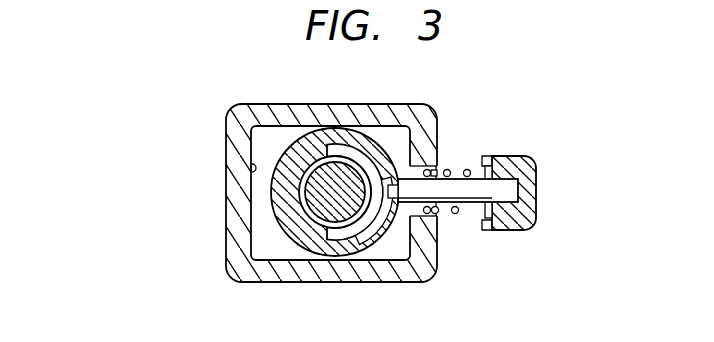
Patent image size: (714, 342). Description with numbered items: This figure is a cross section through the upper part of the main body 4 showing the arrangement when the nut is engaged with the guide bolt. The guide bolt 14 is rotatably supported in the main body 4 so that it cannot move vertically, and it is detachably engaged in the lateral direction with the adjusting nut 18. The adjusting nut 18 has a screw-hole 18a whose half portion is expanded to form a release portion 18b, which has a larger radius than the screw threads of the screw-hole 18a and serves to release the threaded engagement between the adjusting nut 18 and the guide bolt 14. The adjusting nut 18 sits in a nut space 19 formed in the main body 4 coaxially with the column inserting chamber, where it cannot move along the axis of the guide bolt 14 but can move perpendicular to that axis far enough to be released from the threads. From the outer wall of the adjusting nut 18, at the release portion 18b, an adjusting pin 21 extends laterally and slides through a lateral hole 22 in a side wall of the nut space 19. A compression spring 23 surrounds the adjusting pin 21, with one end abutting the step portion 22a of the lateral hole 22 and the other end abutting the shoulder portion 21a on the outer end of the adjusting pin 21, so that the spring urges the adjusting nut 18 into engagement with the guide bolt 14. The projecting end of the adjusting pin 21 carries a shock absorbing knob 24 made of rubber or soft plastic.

The main body 4 is at (380, 102).
The guide bolt 14 is at (312, 234).
The adjusting nut 18 is at (300, 147).
The screw-hole 18a is at (297, 188).
The release portion 18b is at (367, 238).
The nut space 19 is at (252, 161).
The adjusting pin 21 is at (466, 206).
The shoulder portion 21a is at (487, 160).
The lateral hole 22 is at (433, 156).
The step portion 22a is at (430, 220).
The compression spring 23 is at (468, 169).
The shock absorbing knob 24 is at (528, 190).